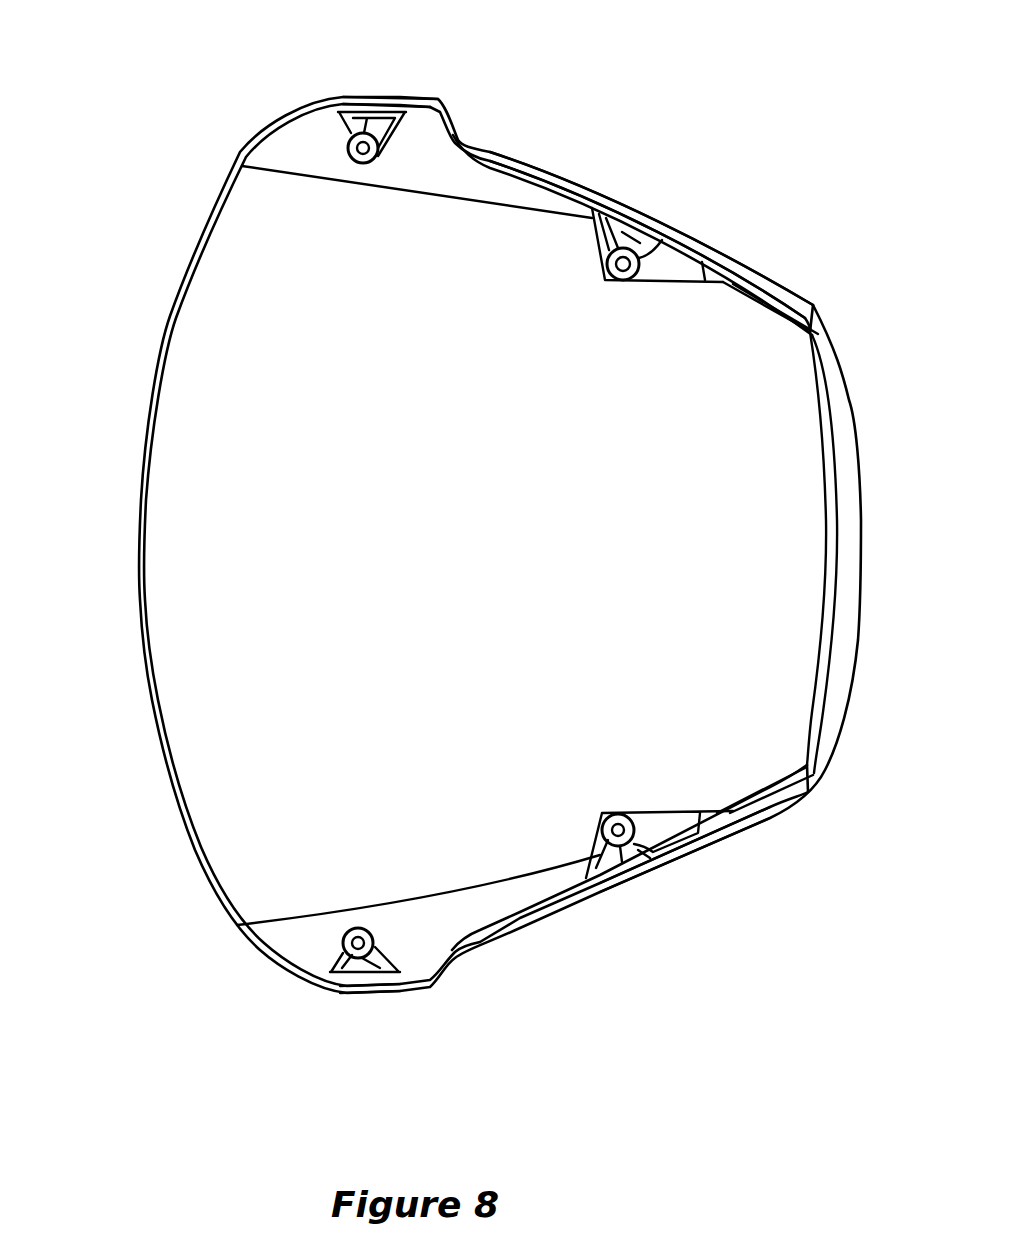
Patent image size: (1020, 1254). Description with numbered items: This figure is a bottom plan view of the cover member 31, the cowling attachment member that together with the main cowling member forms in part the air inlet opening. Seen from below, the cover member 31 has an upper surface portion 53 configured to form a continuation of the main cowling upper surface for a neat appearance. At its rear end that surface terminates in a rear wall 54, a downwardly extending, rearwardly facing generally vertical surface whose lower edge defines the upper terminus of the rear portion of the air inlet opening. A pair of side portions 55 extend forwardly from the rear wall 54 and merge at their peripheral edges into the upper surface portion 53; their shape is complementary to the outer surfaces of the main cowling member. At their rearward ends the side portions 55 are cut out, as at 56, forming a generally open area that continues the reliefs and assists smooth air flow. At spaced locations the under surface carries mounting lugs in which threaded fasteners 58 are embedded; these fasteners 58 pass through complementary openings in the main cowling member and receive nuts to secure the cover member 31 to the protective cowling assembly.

The cover member 31 is at (188, 175).
The upper surface portion 53 is at (218, 401).
The rear wall 54 is at (843, 617).
The side portions 55 is at (385, 97).
The cut out 56 is at (533, 173).
The threaded fasteners 58 is at (363, 164).